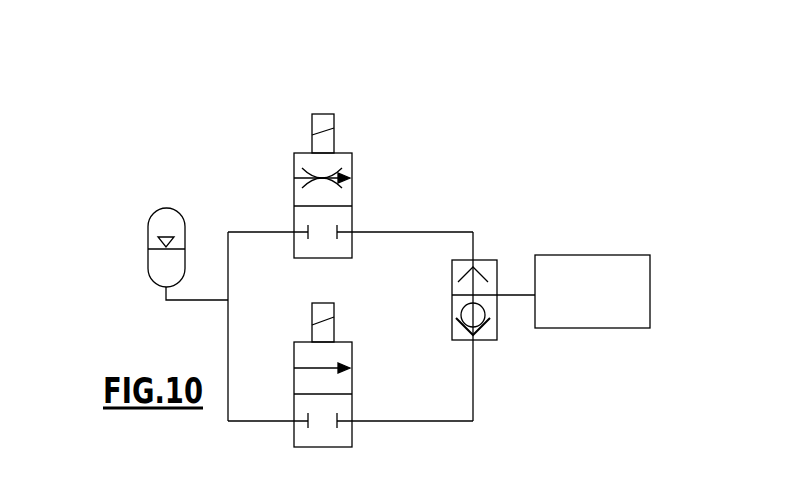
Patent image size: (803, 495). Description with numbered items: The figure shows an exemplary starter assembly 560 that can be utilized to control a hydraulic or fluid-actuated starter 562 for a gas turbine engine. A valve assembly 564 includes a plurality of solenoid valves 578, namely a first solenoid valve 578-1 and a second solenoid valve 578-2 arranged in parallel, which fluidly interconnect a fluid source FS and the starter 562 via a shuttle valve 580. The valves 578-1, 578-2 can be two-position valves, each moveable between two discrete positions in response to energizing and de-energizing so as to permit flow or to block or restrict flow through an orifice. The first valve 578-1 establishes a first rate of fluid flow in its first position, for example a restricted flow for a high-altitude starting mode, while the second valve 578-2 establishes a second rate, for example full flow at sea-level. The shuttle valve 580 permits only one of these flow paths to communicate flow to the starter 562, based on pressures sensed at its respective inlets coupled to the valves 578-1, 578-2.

The starter assembly 560 is at (145, 90).
The valve assembly 564 is at (252, 118).
The fluid source FS is at (148, 243).
The solenoid valves 578 is at (403, 186).
The first solenoid valve 578-1 is at (352, 163).
The second solenoid valve 578-2 is at (352, 434).
The shuttle valve 580 is at (492, 260).
The starter 562 is at (615, 307).